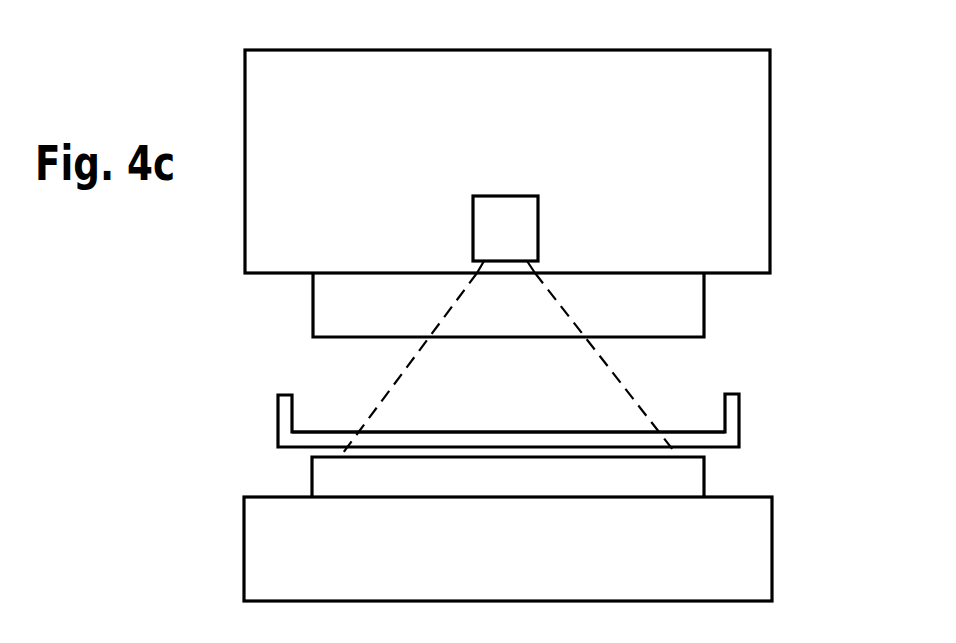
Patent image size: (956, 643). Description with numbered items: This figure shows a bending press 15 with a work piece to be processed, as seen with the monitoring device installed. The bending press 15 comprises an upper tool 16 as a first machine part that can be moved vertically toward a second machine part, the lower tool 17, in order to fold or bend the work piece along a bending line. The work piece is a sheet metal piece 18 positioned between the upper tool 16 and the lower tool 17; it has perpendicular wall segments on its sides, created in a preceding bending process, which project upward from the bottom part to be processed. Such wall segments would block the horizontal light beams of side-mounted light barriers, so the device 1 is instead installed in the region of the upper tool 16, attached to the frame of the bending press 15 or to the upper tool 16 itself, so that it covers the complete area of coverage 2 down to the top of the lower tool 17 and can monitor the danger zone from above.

The bending press 15 is at (791, 145).
The device 1 is at (505, 234).
The upper tool 16 is at (692, 313).
The sheet metal piece 18 is at (733, 402).
The area of coverage 2 is at (390, 388).
The lower tool 17 is at (693, 475).